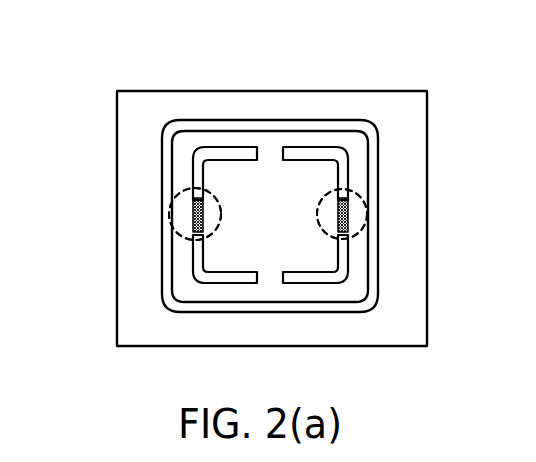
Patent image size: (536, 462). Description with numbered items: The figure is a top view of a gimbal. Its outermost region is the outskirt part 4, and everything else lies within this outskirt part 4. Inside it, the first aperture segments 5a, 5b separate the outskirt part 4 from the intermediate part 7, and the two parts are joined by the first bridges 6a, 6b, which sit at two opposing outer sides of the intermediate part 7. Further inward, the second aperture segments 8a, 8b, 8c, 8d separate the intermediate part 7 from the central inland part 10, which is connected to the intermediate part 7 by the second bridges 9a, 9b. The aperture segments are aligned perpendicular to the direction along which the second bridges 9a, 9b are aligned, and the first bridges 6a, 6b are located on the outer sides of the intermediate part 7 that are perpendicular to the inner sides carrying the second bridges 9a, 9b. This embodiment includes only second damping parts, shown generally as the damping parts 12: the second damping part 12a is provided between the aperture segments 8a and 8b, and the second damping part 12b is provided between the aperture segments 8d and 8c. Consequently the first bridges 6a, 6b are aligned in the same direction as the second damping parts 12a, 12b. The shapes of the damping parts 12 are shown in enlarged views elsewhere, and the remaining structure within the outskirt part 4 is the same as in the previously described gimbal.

The outskirt part 4 is at (405, 125).
The first aperture segment 5a is at (375, 299).
The first aperture segment 5b is at (307, 131).
The first bridge 6a is at (372, 219).
The first bridge 6b is at (172, 225).
The intermediate part 7 is at (234, 292).
The second aperture segment 8a is at (338, 147).
The second aperture segment 8b is at (349, 268).
The second aperture segment 8c is at (192, 263).
The second aperture segment 8d is at (200, 162).
The second bridge 9a is at (270, 152).
The second bridge 9b is at (273, 278).
The inland part 10 is at (240, 180).
The damping parts 12 is at (172, 212).
The second damping part 12a is at (348, 202).
The second damping part 12b is at (193, 208).